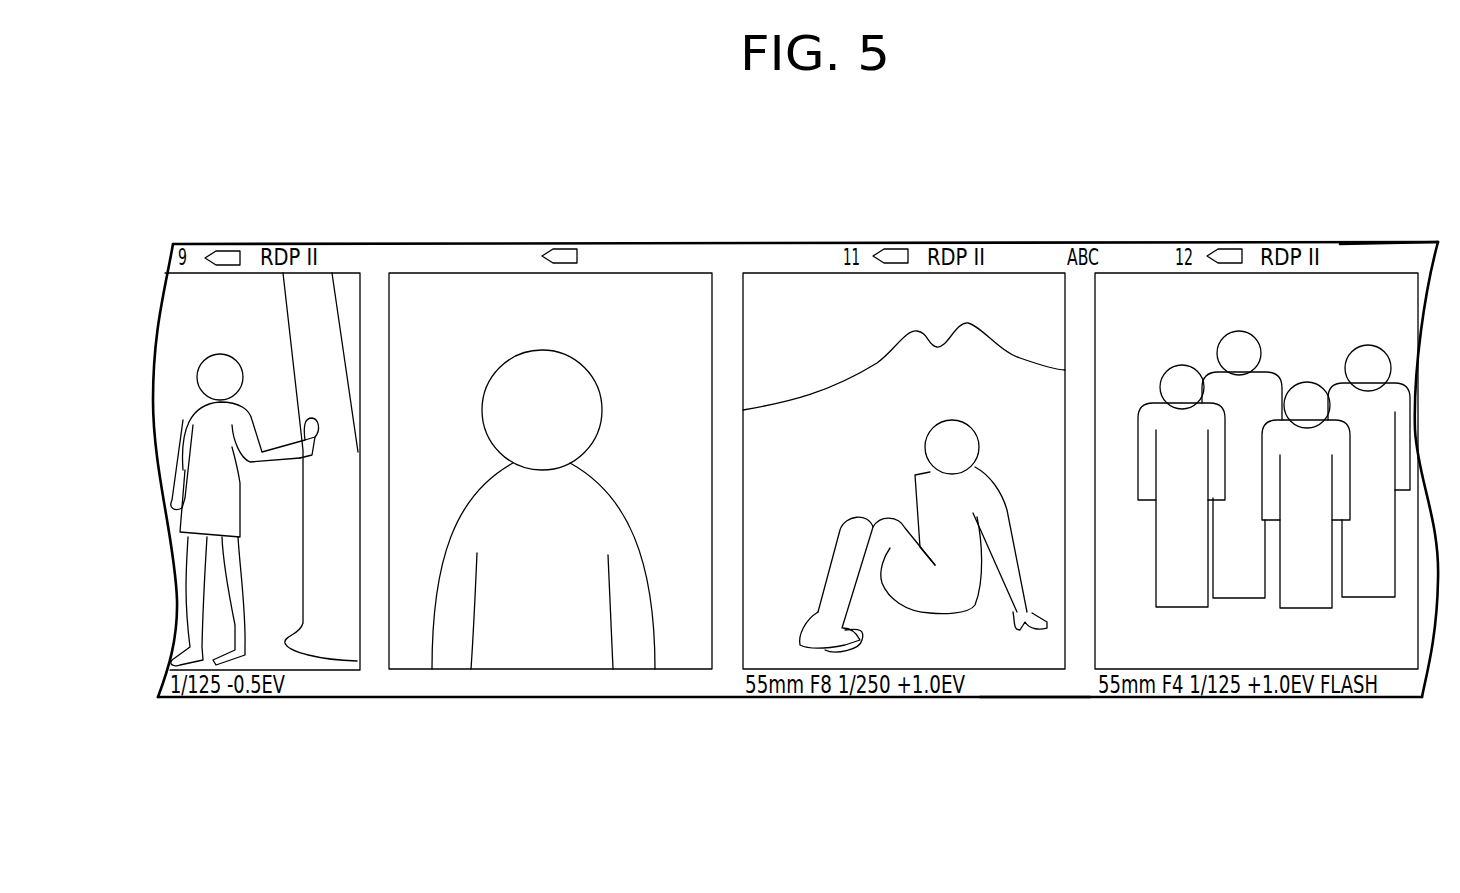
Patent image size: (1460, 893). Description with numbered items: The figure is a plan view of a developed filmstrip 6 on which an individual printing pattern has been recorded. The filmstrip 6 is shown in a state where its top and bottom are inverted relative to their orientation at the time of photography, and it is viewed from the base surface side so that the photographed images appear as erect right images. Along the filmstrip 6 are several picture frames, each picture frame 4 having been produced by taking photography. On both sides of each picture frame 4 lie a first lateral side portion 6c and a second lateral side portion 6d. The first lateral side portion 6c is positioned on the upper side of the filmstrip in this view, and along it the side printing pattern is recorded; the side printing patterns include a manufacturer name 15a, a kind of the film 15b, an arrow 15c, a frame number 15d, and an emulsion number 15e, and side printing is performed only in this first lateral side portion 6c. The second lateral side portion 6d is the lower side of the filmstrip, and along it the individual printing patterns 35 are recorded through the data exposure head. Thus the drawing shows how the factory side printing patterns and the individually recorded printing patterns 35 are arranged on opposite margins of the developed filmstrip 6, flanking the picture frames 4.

The picture frame 4 is at (713, 595).
The filmstrip 6 is at (1037, 242).
The first lateral side portion 6c is at (1385, 257).
The second lateral side portion 6d is at (1042, 682).
The manufacturer name 15a is at (441, 243).
The kind of the film 15b is at (654, 241).
The arrow 15c is at (562, 246).
The frame number 15d is at (520, 243).
The emulsion number 15e is at (804, 246).
The individual printing patterns 35 is at (682, 708).